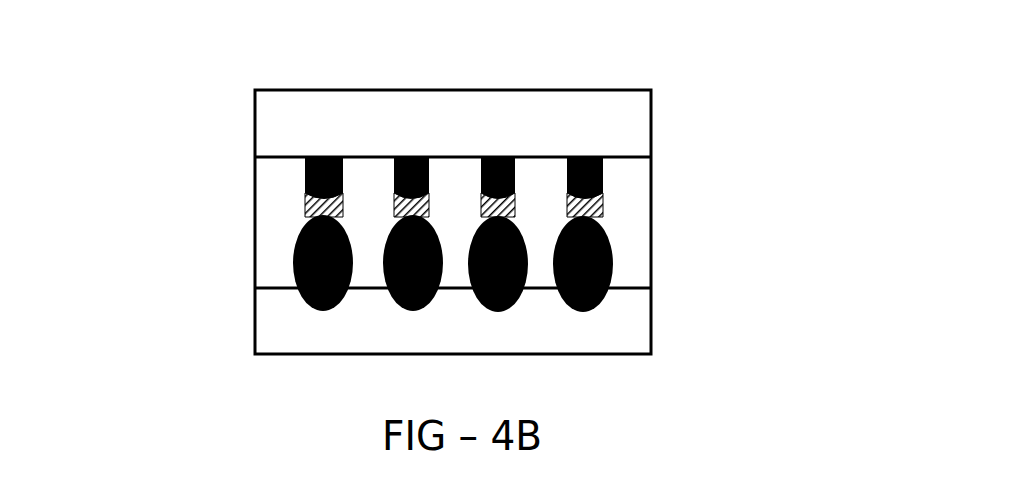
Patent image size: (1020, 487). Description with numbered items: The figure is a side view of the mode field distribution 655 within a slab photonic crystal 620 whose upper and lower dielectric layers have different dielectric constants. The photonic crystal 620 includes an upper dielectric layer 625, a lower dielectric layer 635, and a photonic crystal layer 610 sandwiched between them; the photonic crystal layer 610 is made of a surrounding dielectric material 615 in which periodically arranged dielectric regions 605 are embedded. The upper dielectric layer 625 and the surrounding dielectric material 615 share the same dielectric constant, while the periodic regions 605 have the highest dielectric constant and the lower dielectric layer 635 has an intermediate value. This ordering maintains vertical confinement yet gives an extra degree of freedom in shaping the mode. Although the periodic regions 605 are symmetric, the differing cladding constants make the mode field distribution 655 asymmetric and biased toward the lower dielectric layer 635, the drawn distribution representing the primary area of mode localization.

The periodically arranged dielectric regions 605 is at (600, 212).
The photonic crystal layer 610 is at (651, 202).
The surrounding dielectric material 615 is at (277, 260).
The photonic crystal 620 is at (707, 90).
The upper dielectric layer 625 is at (343, 119).
The lower dielectric layer 635 is at (310, 317).
The mode field distribution 655 is at (342, 170).